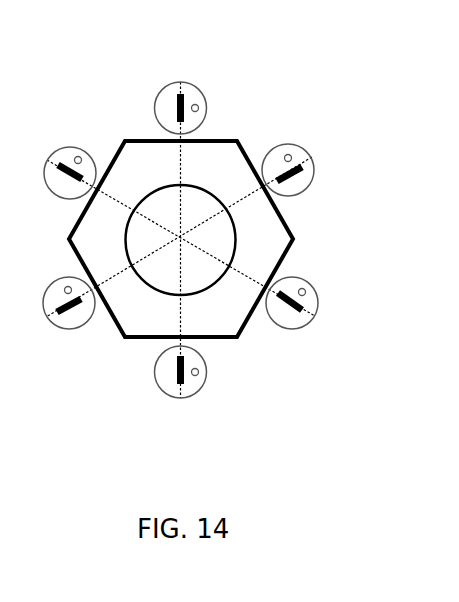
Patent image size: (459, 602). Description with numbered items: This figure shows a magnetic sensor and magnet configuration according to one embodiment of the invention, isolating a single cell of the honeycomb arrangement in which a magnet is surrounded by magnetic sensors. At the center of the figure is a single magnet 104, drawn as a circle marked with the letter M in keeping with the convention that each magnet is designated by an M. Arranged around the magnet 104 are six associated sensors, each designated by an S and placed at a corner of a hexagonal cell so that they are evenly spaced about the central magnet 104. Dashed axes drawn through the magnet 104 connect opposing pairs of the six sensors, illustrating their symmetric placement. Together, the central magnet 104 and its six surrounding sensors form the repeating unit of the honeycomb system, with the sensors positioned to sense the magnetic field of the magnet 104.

The magnet 104 is at (213, 281).